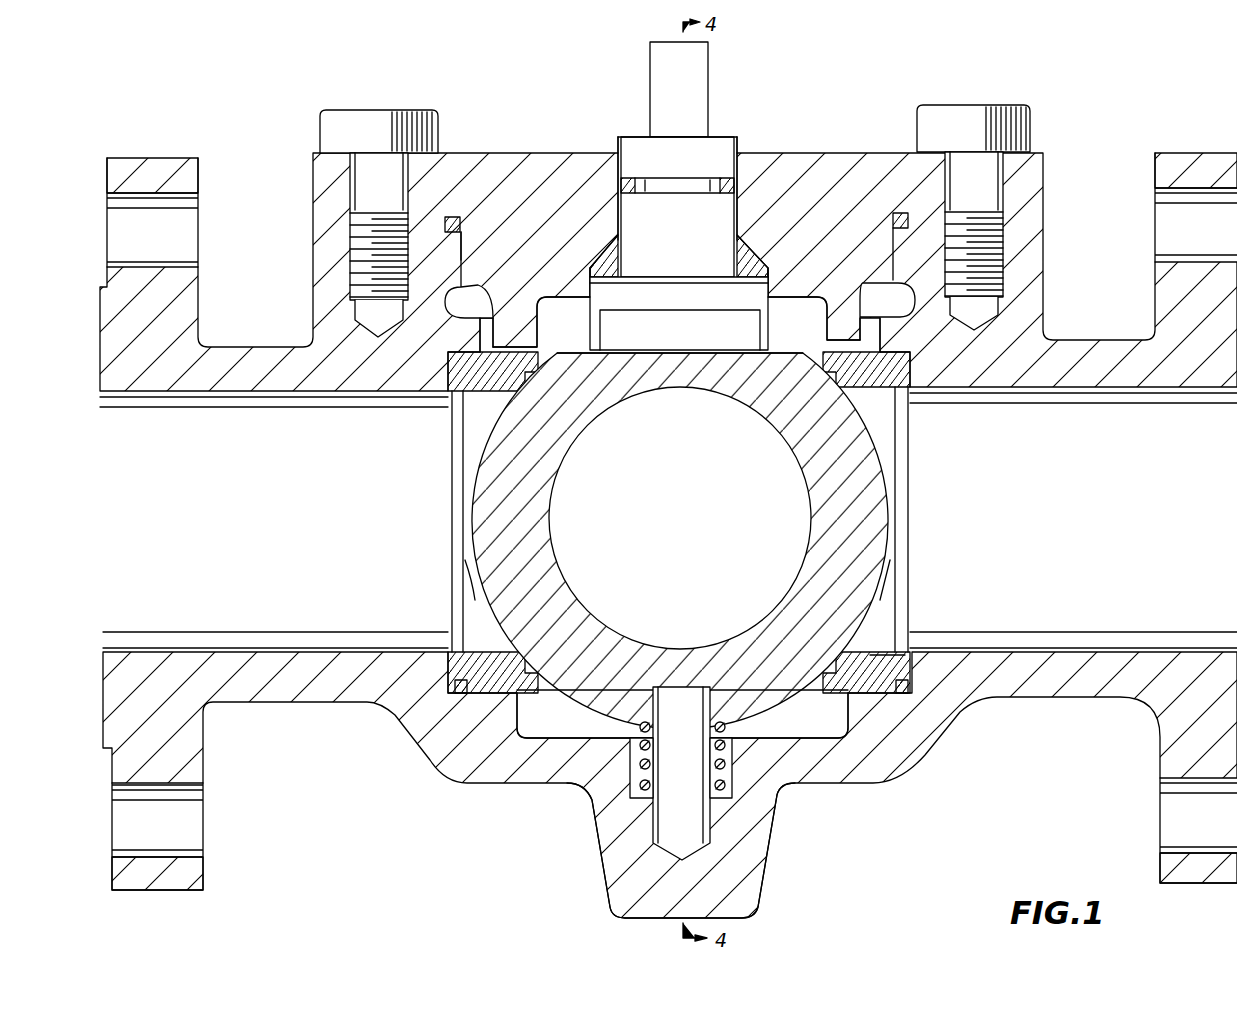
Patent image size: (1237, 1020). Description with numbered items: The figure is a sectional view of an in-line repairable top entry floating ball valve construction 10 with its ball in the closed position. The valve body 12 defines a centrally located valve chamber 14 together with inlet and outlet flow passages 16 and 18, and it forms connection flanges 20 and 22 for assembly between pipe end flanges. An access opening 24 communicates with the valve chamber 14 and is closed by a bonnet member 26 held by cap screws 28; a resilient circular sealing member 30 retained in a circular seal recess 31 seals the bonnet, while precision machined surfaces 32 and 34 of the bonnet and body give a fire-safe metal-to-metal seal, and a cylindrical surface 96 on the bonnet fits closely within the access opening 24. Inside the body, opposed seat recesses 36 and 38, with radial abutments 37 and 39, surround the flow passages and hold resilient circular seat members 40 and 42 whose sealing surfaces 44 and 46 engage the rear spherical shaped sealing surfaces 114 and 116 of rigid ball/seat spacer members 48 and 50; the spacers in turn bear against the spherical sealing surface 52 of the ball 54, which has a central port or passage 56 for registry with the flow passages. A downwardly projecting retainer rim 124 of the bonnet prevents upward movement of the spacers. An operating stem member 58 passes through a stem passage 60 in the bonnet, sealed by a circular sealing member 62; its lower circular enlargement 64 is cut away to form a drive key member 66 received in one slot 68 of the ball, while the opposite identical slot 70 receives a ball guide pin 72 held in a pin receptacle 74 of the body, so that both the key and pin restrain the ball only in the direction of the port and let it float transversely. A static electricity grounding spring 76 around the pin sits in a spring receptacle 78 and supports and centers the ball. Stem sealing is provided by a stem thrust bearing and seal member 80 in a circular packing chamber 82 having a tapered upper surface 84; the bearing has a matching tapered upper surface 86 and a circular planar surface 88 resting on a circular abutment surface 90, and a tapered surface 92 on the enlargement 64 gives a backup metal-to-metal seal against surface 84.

The in-line repairable top entry floating ball valve construction 10 is at (224, 60).
The valve body 12 is at (318, 245).
The valve chamber 14 is at (458, 753).
The inlet flow passage 16 is at (235, 650).
The outlet flow passage 18 is at (1150, 650).
The connection flange 20 is at (135, 170).
The connection flange 22 is at (1200, 153).
The access opening 24 is at (893, 222).
The bonnet member 26 is at (813, 157).
The cap screws 28 is at (968, 110).
The resilient circular sealing member 30 is at (452, 217).
The circular seal recess 31 is at (466, 250).
The precision machined surface 32 is at (950, 240).
The precision machined surface 34 is at (938, 200).
The seat recess 36 is at (453, 700).
The radial abutment 37 is at (455, 392).
The seat recess 38 is at (907, 693).
The radial abutment 39 is at (912, 363).
The circular seat member 40 is at (458, 655).
The circular seat member 42 is at (913, 660).
The sealing surface 44 is at (455, 450).
The sealing surface 46 is at (893, 432).
The ball/seat spacer member 48 is at (463, 583).
The ball/seat spacer member 50 is at (870, 653).
The spherical sealing surface 52 is at (883, 577).
The spherical plug member or ball 54 is at (870, 497).
The central port or passage 56 is at (671, 533).
The operating stem member 58 is at (712, 147).
The stem passage 60 is at (626, 163).
The circular sealing member 62 is at (740, 183).
The circular enlargement 64 is at (747, 290).
The drive key member 66 is at (733, 355).
The slot 68 is at (590, 335).
The slot 70 is at (537, 713).
The ball guide pin 72 is at (683, 712).
The pin receptacle 74 is at (612, 850).
The static electricity grounding spring 76 is at (730, 777).
The spring receptacle 78 is at (628, 795).
The stem thrust bearing and seal member 80 is at (603, 250).
The circular packing chamber 82 is at (790, 255).
The tapered upper surface 84 is at (757, 258).
The tapered upper surface 86 is at (600, 262).
The circular planar surface 88 is at (612, 293).
The circular abutment surface 90 is at (750, 277).
The tapered surface 92 is at (630, 283).
The cylindrical surface 96 is at (410, 262).
The rear spherical shaped sealing surface 114 is at (484, 345).
The rear spherical shaped sealing surface 116 is at (882, 350).
The retainer rim 124 is at (858, 330).